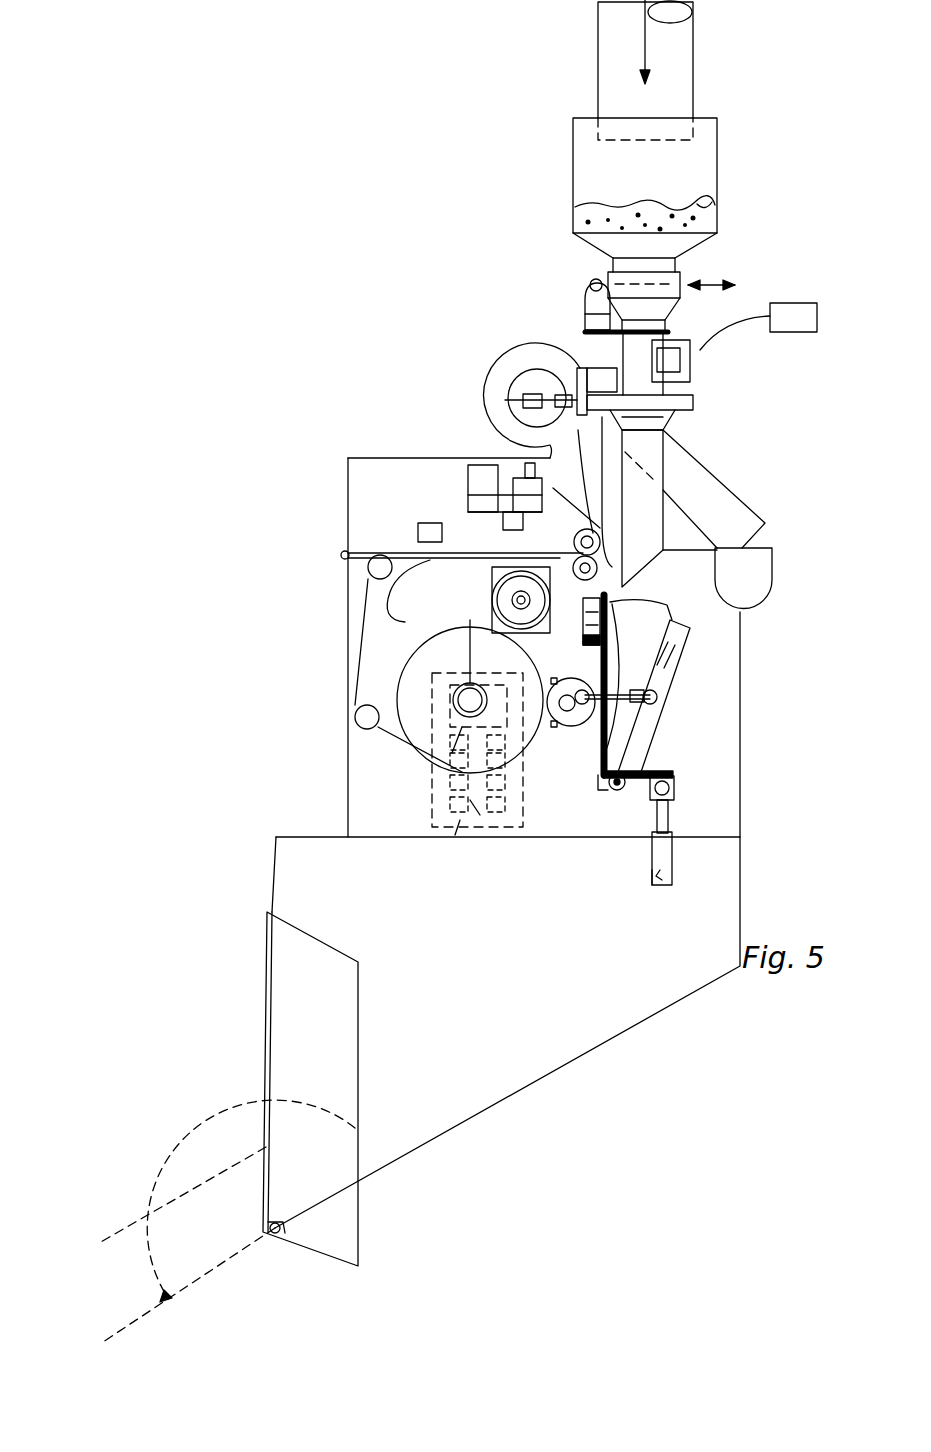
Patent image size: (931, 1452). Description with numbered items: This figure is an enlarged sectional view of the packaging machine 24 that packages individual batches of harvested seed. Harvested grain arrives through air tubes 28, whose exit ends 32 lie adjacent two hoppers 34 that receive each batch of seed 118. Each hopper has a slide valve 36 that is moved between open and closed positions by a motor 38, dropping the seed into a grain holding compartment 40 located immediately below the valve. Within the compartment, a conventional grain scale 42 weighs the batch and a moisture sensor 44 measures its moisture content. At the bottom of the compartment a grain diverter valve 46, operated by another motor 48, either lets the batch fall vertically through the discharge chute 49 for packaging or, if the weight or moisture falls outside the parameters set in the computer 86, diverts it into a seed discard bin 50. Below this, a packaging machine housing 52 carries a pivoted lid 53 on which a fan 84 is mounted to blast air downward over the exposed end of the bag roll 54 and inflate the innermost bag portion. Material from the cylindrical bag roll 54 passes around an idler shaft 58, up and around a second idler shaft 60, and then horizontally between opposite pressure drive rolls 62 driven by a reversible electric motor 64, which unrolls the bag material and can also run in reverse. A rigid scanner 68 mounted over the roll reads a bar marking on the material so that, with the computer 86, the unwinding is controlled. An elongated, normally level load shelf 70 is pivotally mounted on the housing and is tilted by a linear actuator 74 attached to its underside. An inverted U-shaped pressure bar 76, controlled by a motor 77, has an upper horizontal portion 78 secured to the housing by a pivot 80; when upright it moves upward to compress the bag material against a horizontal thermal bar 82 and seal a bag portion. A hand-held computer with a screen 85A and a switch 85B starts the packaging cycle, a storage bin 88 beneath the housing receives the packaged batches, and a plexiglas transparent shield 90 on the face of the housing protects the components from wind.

The packaging machine 24 is at (423, 423).
The air tubes 28 is at (678, 84).
The exit ends 32 is at (690, 158).
The hoppers 34 is at (718, 180).
The batch of seed 118 is at (697, 204).
The slide valve 36 is at (600, 262).
The motor 38 is at (585, 295).
The grain holding compartment 40 is at (697, 360).
The grain scale 42 is at (692, 372).
The moisture sensor 44 is at (797, 332).
The grain diverter valve 46 is at (680, 442).
The motor 48 is at (605, 378).
The fan 84 is at (510, 358).
The discharge chute 49 is at (585, 540).
The pressure drive rolls 62 is at (560, 565).
The seed discard bin 50 is at (765, 568).
The packaging machine housing 52 is at (372, 558).
The lid 53 is at (348, 522).
The idler shaft 60 is at (341, 556).
The bag roll 54 is at (408, 666).
The idler shaft 58 is at (470, 620).
The reversible electric motor 64 is at (510, 585).
The computer 86 is at (483, 485).
The rigid scanner 68 is at (430, 523).
The screen 85A is at (480, 835).
The switch 85B is at (450, 782).
The upper horizontal portion 78 is at (612, 615).
The transparent shield 90 is at (672, 640).
The horizontal thermal bar 82 is at (605, 648).
The linear actuator 74 is at (597, 725).
The pressure bar 76 is at (655, 738).
The load shelf 70 is at (678, 764).
The pivot 80 is at (612, 800).
The storage bin 88 is at (652, 878).
The motor 77 is at (625, 888).